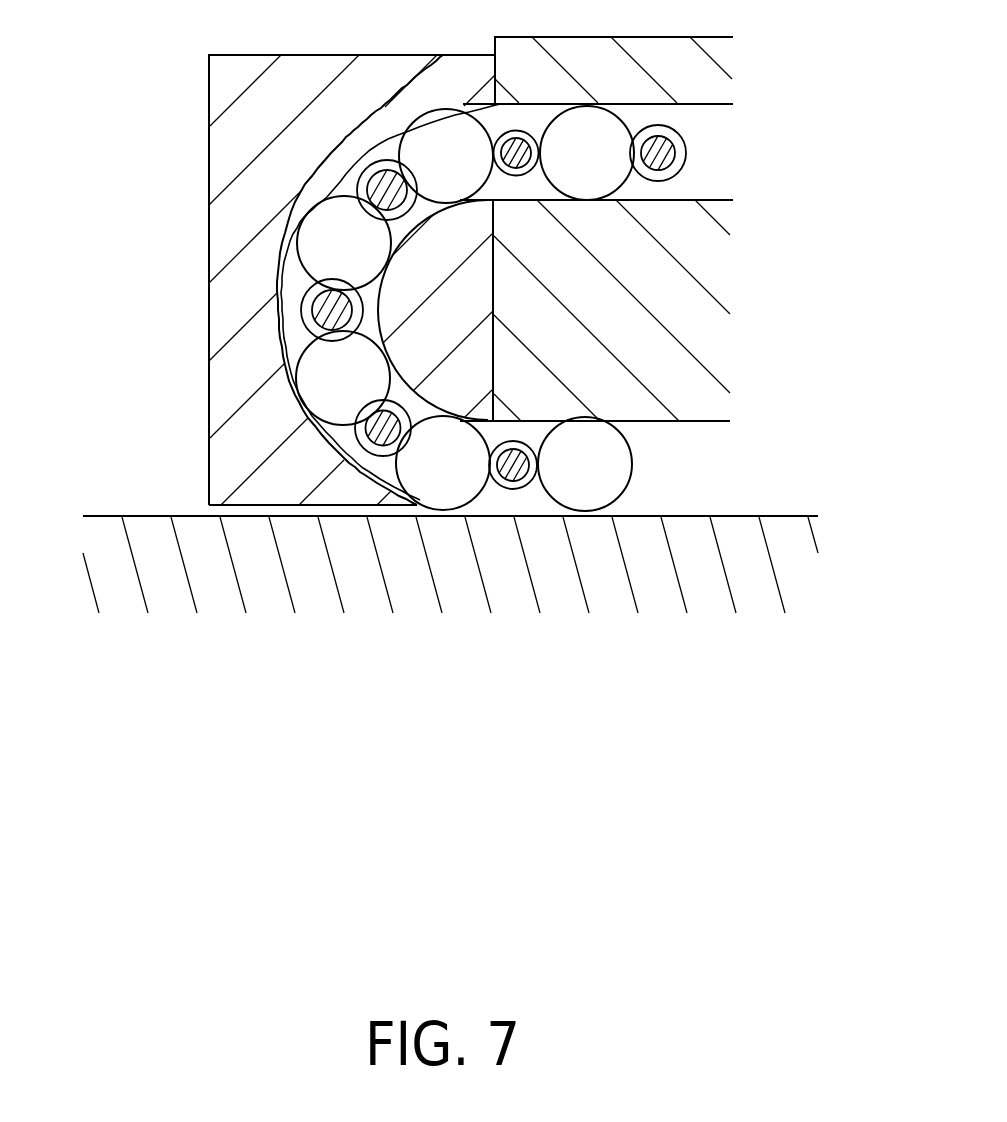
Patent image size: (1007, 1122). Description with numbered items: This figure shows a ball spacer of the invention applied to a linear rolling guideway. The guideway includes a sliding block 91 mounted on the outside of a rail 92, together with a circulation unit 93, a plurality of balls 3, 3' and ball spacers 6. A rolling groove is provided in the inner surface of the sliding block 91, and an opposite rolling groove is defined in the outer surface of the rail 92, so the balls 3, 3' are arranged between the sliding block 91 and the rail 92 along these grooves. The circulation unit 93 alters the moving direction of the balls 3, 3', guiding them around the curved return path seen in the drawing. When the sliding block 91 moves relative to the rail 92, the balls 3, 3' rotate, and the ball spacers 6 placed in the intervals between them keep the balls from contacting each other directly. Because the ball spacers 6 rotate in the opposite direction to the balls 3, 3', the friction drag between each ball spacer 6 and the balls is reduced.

The circulation unit 93 is at (263, 190).
The sliding block 91 is at (693, 253).
The rail 92 is at (292, 580).
The ball 3 is at (465, 406).
The ball 3' is at (682, 464).
The ball spacer 6 is at (527, 490).